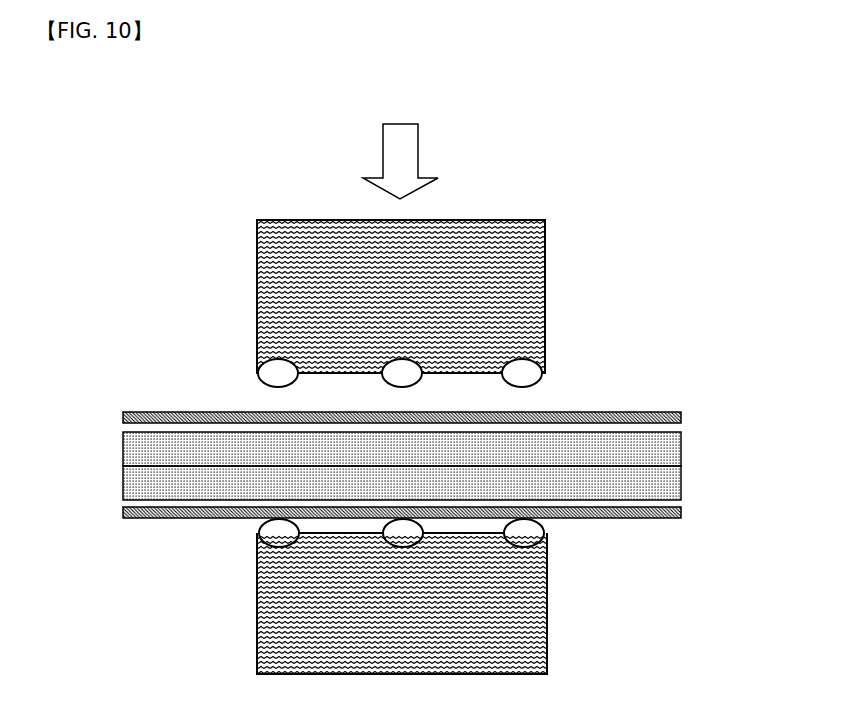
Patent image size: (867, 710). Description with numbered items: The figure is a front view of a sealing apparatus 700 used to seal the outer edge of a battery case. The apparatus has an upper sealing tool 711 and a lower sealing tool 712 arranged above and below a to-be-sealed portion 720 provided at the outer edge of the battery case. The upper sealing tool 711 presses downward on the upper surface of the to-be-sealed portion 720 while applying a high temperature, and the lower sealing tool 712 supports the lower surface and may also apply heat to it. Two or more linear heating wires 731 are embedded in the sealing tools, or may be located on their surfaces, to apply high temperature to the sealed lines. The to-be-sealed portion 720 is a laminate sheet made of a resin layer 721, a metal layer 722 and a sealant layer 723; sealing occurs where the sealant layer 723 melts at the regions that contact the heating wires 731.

The sealing apparatus 700 is at (79, 136).
The upper sealing tool 711 is at (545, 253).
The lower sealing tool 712 is at (547, 583).
The linear heating wires 731 is at (542, 372).
The to-be-sealed portion 720 is at (416, 444).
The resin layer 721 is at (682, 415).
The metal layer 722 is at (682, 431).
The sealant layer 723 is at (416, 465).